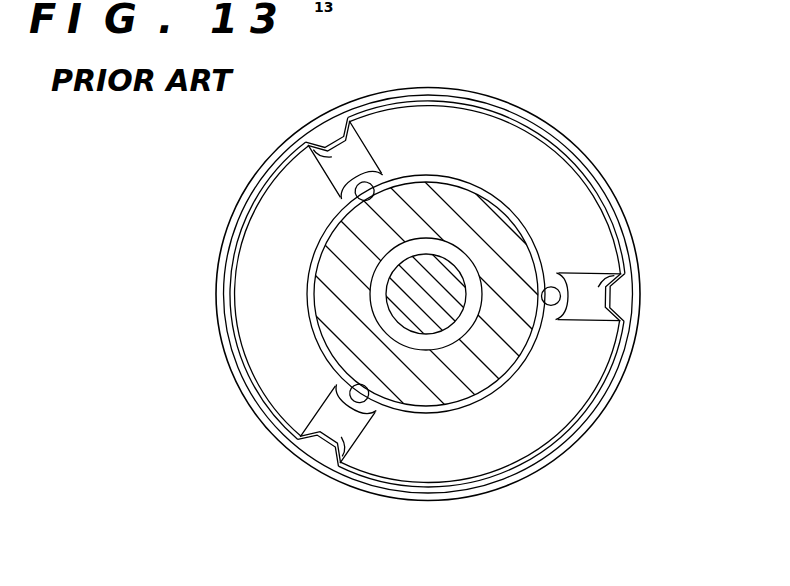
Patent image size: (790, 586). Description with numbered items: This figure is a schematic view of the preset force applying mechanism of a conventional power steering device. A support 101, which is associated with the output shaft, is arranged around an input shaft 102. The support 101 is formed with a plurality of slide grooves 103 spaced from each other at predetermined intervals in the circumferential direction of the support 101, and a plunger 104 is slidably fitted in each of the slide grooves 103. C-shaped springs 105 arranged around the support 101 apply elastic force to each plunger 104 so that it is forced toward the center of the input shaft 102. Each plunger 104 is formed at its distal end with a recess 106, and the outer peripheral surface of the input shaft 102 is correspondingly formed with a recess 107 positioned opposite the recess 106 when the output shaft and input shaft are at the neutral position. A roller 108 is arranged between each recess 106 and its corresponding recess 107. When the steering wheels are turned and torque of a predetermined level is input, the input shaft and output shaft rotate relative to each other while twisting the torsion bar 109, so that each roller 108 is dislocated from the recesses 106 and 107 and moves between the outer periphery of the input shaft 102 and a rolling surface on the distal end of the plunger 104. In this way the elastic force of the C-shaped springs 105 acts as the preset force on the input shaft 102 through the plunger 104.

The support 101 is at (576, 199).
The input shaft 102 is at (480, 203).
The slide grooves 103 is at (333, 139).
The plunger 104 is at (361, 135).
The C-shaped springs 105 is at (468, 103).
The recess 106 is at (377, 180).
The recess 107 is at (348, 223).
The roller 108 is at (378, 176).
The torsion bar 109 is at (395, 290).